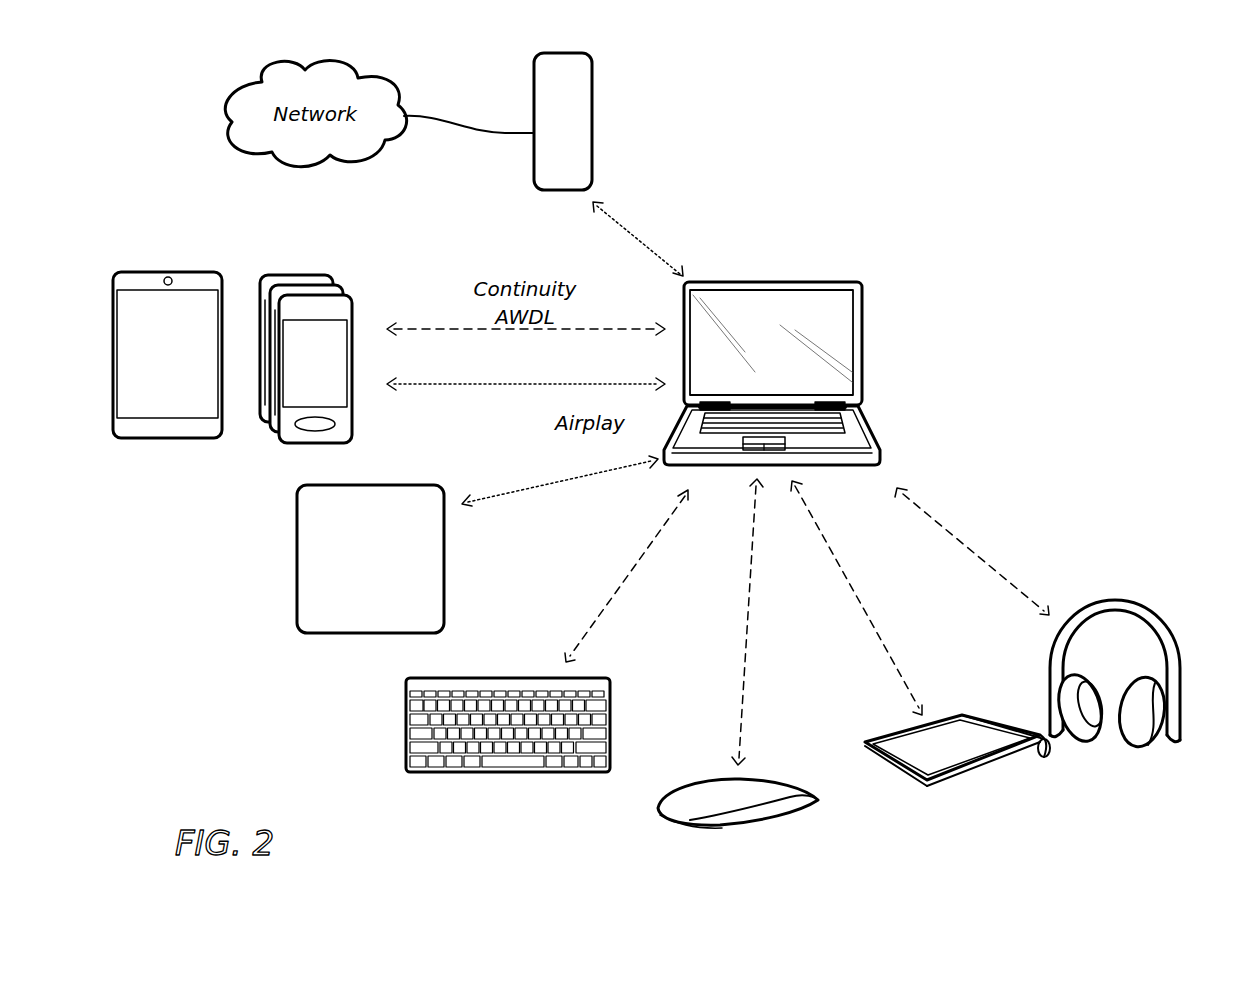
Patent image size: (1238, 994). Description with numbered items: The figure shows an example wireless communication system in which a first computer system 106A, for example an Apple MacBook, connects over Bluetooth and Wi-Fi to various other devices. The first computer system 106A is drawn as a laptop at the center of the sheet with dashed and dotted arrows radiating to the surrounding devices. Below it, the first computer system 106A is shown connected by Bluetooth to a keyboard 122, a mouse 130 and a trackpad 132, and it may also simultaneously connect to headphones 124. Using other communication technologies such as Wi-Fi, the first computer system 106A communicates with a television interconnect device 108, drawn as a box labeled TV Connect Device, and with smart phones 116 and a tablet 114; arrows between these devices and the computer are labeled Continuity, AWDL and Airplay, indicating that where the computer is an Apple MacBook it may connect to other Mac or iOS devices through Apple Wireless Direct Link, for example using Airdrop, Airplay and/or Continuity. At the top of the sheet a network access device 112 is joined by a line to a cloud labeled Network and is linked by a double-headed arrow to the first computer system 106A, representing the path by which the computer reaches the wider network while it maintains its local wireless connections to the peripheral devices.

The first computer system 106A is at (765, 282).
The TV connect device 108 is at (376, 485).
The network access device 112 is at (562, 52).
The tablet computer 114 is at (166, 270).
The smart phones 116 is at (297, 274).
The wireless keyboard 122 is at (497, 772).
The headphones 124 is at (1109, 598).
The wireless mouse 130 is at (722, 826).
The wireless trackpad 132 is at (968, 768).